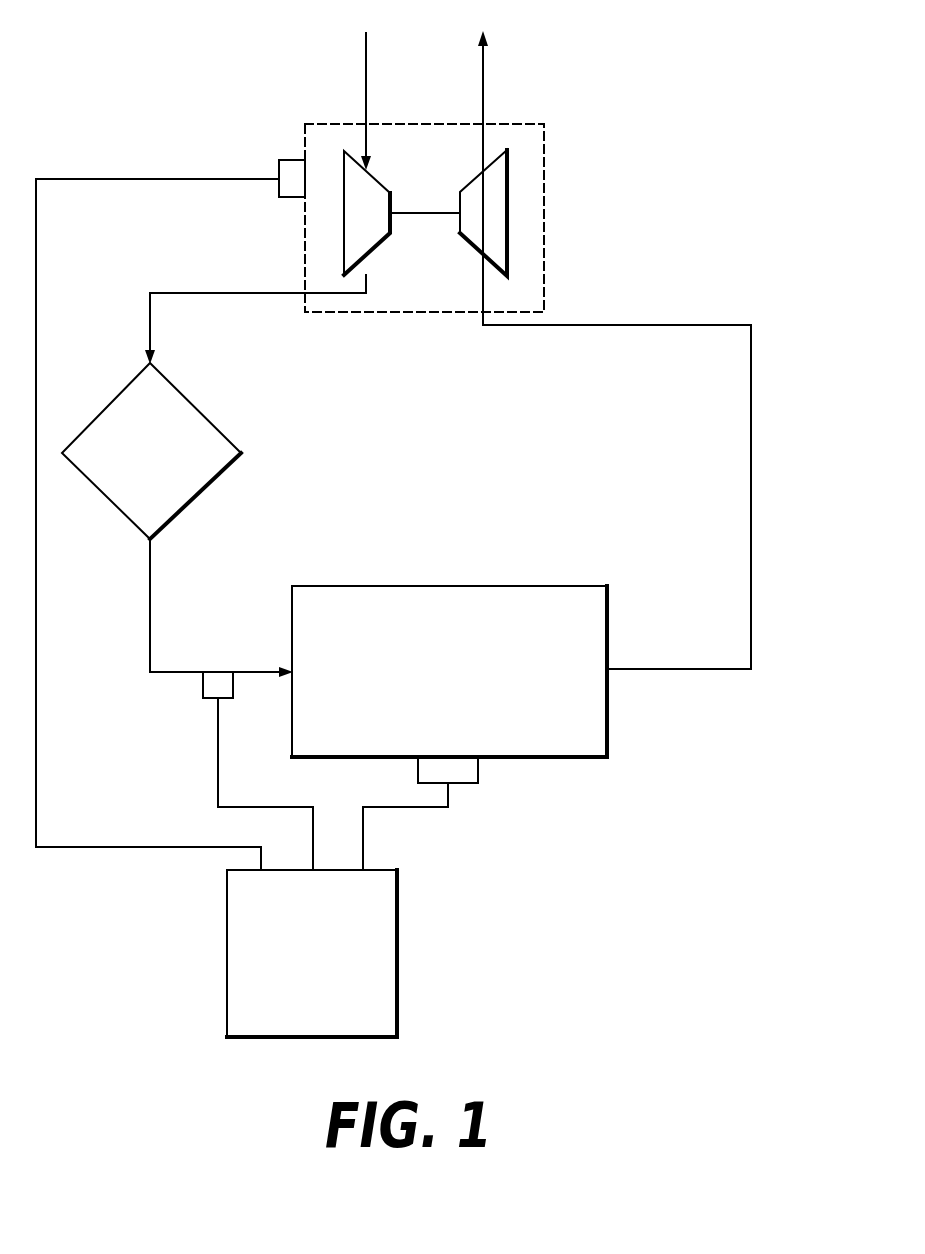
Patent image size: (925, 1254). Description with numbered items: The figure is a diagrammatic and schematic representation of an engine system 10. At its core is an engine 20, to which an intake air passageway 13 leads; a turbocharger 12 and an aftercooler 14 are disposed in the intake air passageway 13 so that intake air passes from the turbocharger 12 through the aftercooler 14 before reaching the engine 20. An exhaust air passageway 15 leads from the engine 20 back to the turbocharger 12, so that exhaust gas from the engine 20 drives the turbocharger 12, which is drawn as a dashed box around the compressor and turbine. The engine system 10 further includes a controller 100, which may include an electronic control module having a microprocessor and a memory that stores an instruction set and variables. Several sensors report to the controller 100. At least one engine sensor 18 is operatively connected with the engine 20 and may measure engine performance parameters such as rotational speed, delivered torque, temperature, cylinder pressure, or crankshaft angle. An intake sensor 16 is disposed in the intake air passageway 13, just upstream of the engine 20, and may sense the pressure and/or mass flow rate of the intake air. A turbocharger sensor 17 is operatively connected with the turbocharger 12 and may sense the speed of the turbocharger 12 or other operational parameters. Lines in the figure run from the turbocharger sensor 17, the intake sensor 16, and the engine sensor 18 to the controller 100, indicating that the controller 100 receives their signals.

The engine system 10 is at (773, 177).
The turbocharger 12 is at (545, 200).
The intake air passageway 13 is at (278, 294).
The aftercooler 14 is at (207, 417).
The exhaust air passageway 15 is at (651, 326).
The intake sensor 16 is at (208, 699).
The turbocharger sensor 17 is at (279, 161).
The engine sensor 18 is at (479, 777).
The engine 20 is at (432, 685).
The controller 100 is at (288, 968).